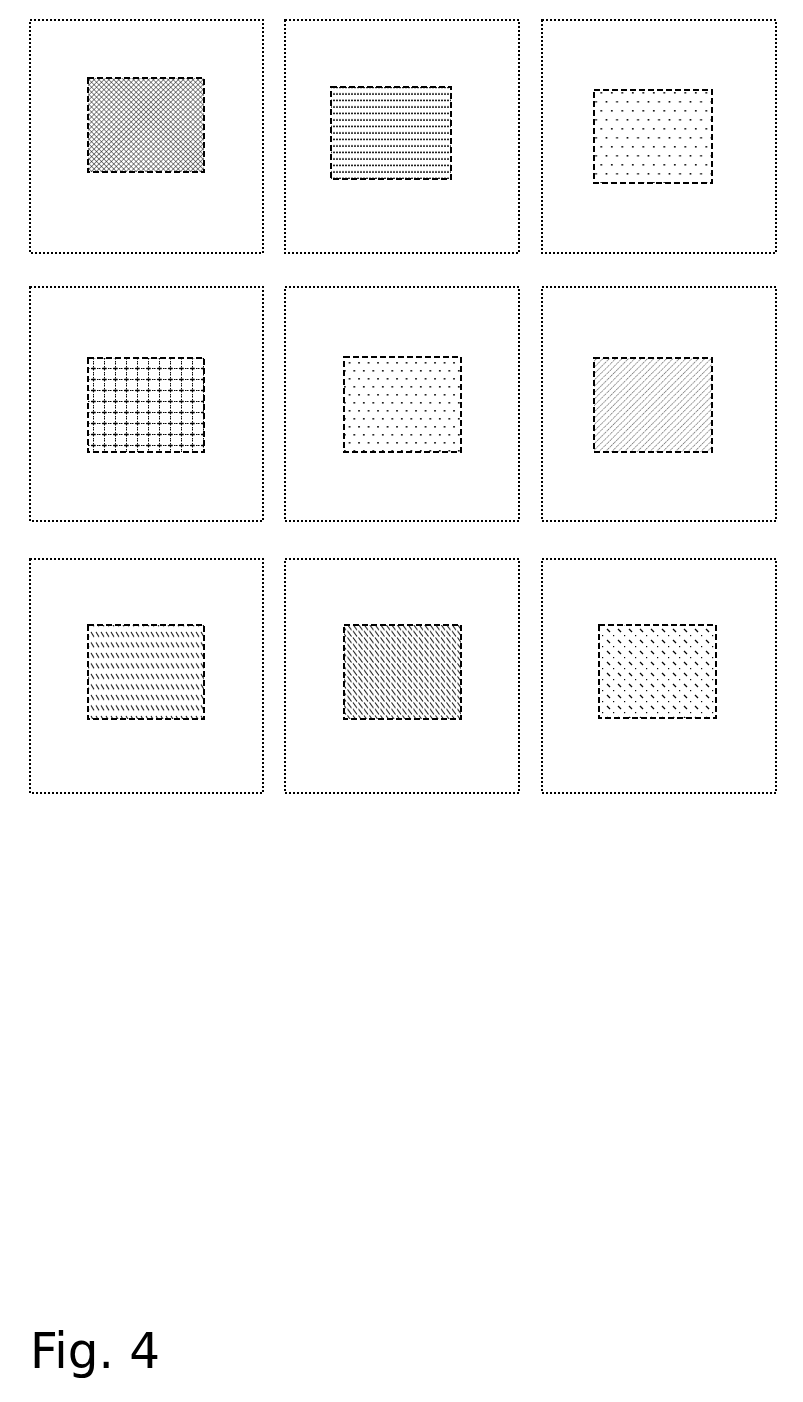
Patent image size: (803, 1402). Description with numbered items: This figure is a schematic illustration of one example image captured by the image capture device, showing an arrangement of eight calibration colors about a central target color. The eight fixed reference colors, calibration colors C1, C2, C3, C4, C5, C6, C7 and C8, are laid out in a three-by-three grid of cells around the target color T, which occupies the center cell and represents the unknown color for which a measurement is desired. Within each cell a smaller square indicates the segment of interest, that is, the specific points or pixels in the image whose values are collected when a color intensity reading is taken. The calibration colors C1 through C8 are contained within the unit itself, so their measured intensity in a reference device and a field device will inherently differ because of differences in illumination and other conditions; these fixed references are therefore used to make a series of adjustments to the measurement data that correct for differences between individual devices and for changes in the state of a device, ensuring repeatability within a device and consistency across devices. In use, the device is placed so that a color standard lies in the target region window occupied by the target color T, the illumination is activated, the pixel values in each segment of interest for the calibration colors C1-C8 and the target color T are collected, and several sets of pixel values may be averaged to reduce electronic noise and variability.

The calibration color C1 is at (146, 136).
The calibration color C2 is at (402, 136).
The calibration color C3 is at (659, 136).
The calibration color C4 is at (146, 404).
The target color T is at (402, 404).
The calibration color C5 is at (659, 404).
The calibration color C6 is at (146, 676).
The calibration color C7 is at (402, 676).
The calibration color C8 is at (659, 676).